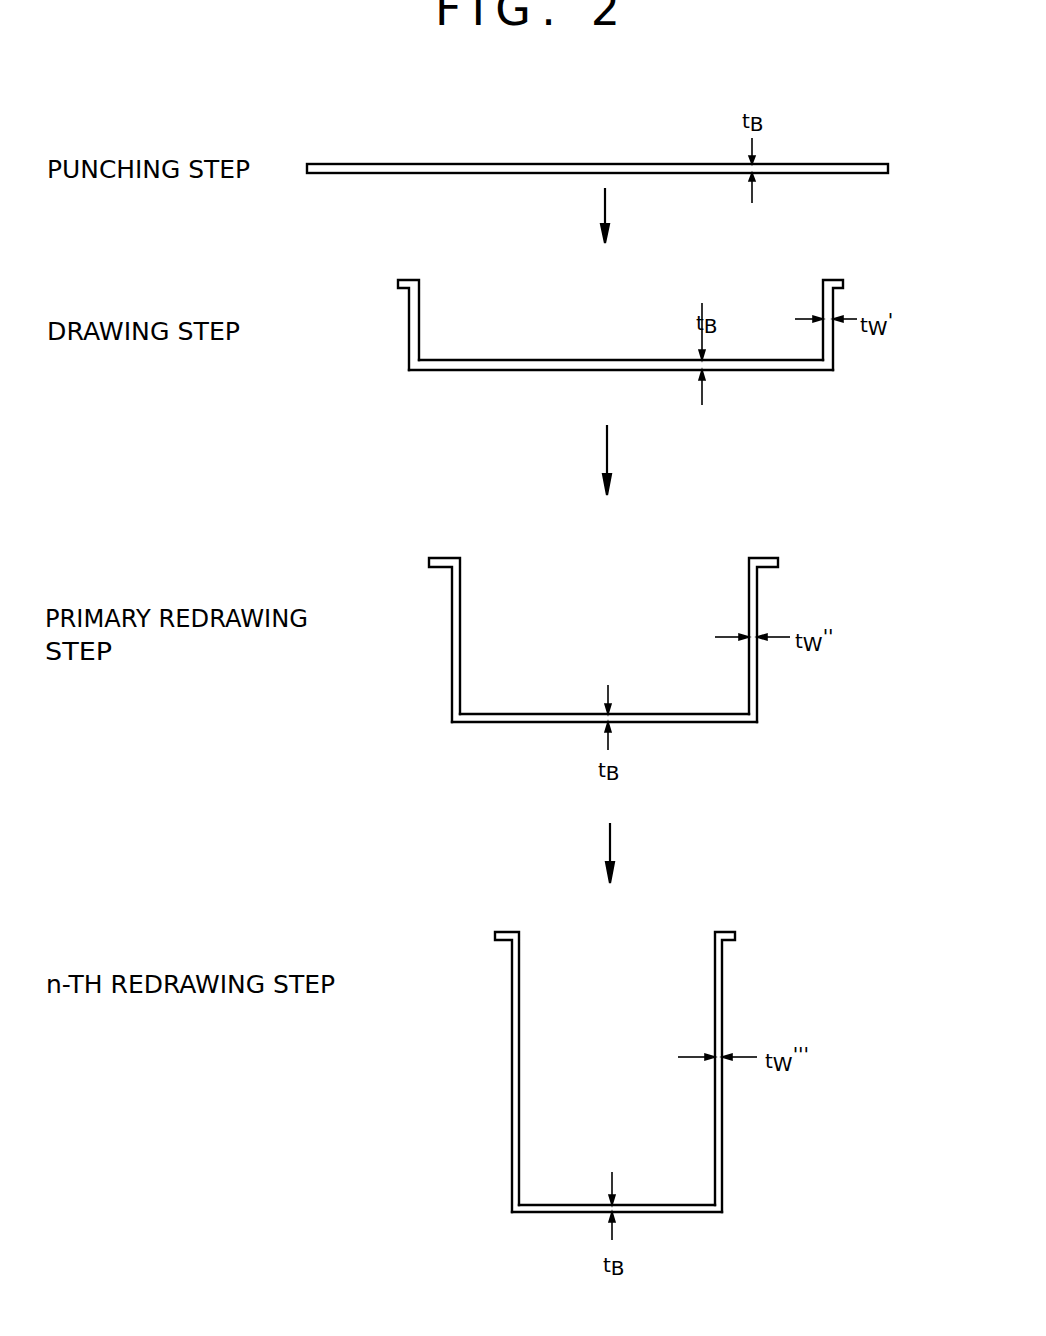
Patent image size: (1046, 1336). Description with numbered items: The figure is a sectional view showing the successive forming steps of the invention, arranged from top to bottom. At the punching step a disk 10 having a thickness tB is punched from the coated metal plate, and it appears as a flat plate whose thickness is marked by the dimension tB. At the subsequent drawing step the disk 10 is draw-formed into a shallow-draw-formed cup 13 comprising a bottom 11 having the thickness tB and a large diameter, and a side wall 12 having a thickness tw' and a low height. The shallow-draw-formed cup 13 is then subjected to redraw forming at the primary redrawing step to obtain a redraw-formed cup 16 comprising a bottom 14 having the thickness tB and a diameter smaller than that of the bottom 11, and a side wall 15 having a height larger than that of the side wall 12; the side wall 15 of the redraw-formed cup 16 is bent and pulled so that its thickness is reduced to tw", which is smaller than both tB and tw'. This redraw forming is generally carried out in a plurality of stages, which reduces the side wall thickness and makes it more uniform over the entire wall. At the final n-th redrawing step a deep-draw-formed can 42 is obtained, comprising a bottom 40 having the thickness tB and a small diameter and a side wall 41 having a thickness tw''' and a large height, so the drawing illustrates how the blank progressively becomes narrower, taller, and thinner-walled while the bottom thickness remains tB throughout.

The disk 10 is at (838, 163).
The bottom 11 is at (787, 370).
The side wall 12 is at (833, 345).
The shallow-draw-formed cup 13 is at (617, 352).
The bottom 14 is at (715, 722).
The side wall 15 is at (757, 673).
The redraw-formed cup 16 is at (600, 669).
The bottom 40 is at (697, 1212).
The side wall 41 is at (722, 1107).
The deep-draw-formed can 42 is at (618, 1105).